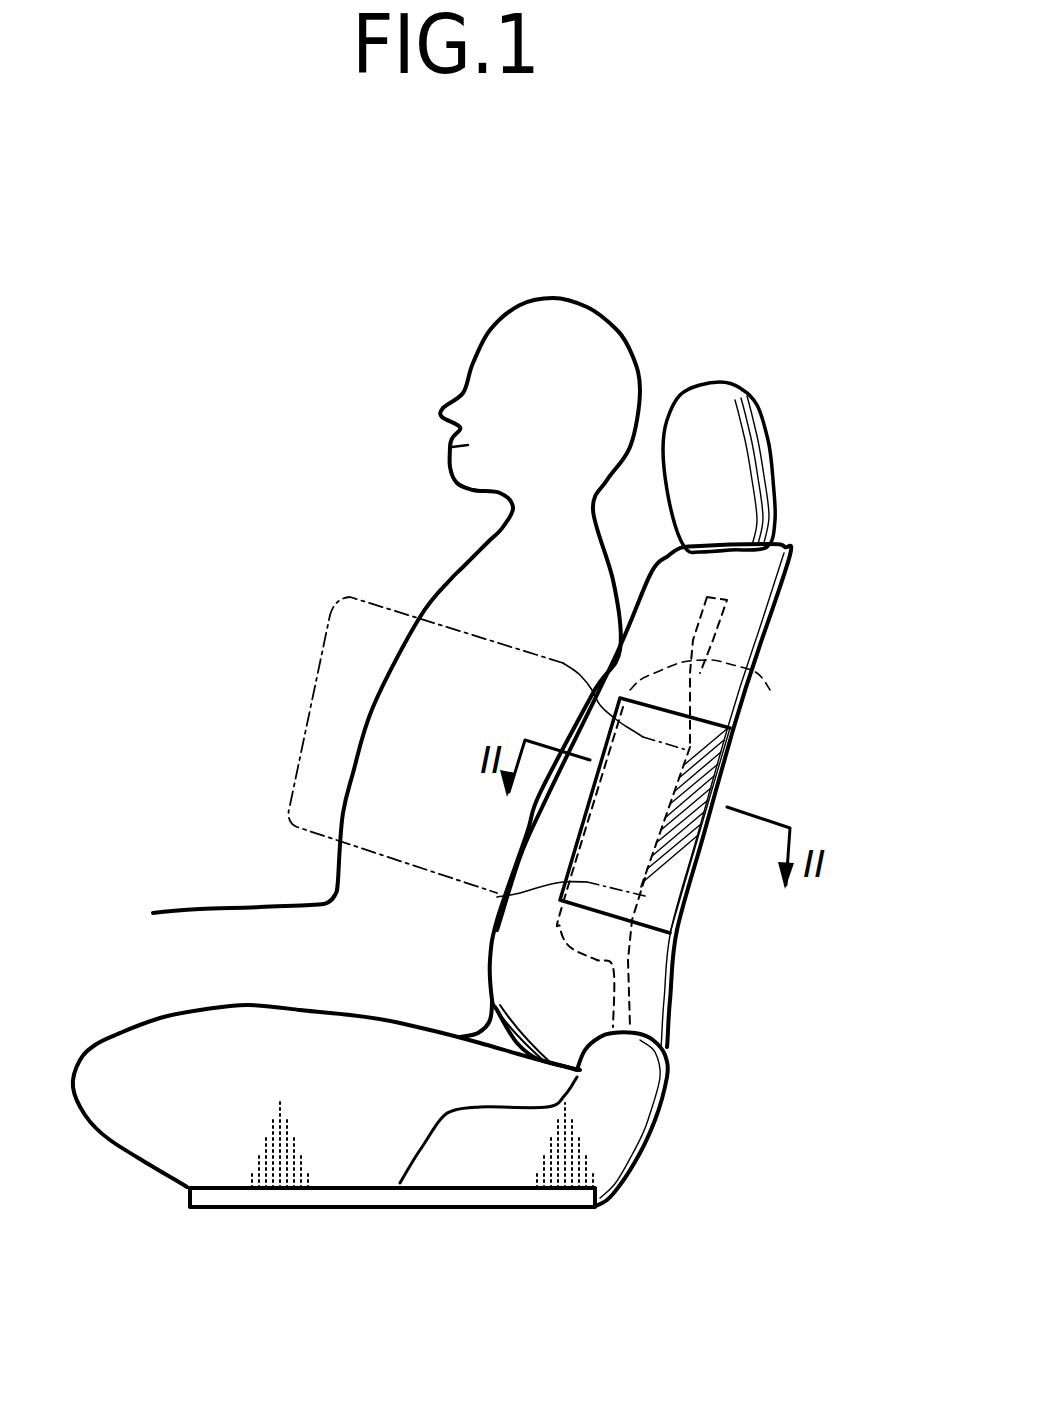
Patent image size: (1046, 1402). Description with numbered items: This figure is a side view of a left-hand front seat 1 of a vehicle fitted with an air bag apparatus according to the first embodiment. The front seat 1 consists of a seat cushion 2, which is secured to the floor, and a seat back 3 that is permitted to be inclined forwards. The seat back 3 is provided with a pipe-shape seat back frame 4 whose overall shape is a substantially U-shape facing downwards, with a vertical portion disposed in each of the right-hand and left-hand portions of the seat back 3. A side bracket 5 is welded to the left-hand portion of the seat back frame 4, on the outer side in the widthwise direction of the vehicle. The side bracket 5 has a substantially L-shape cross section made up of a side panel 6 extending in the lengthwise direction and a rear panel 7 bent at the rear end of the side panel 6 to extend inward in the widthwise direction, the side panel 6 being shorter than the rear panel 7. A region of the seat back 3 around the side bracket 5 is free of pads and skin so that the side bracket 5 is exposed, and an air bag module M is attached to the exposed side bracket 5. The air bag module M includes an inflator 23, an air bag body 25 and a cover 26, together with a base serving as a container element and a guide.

The front seat 1 is at (690, 1017).
The seat cushion 2 is at (120, 1033).
The seat back 3 is at (793, 552).
The seat back frame 4 is at (720, 640).
The side bracket 5 is at (868, 637).
The side panel 6 is at (720, 660).
The rear panel 7 is at (710, 705).
The inflator 23 is at (683, 890).
The air bag body 25 is at (303, 717).
The cover 26 is at (670, 950).
The air bag module M is at (713, 882).